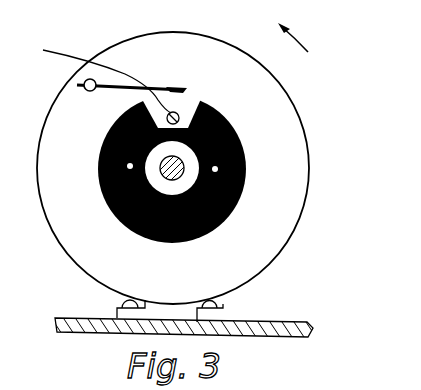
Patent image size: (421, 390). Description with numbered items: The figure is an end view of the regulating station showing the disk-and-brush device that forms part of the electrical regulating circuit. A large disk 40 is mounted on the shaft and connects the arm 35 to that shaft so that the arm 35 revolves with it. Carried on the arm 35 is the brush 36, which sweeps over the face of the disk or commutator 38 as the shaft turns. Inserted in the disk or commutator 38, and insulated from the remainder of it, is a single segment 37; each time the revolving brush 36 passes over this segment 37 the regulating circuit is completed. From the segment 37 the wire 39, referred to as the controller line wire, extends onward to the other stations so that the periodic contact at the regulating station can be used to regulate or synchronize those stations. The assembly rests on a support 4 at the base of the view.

The base support 4 is at (175, 303).
The arm 35 is at (121, 103).
The brush 36 is at (148, 87).
The segment 37 is at (190, 100).
The disk or commutator 38 is at (247, 174).
The wire 39 is at (67, 57).
The large disk 40 is at (72, 238).